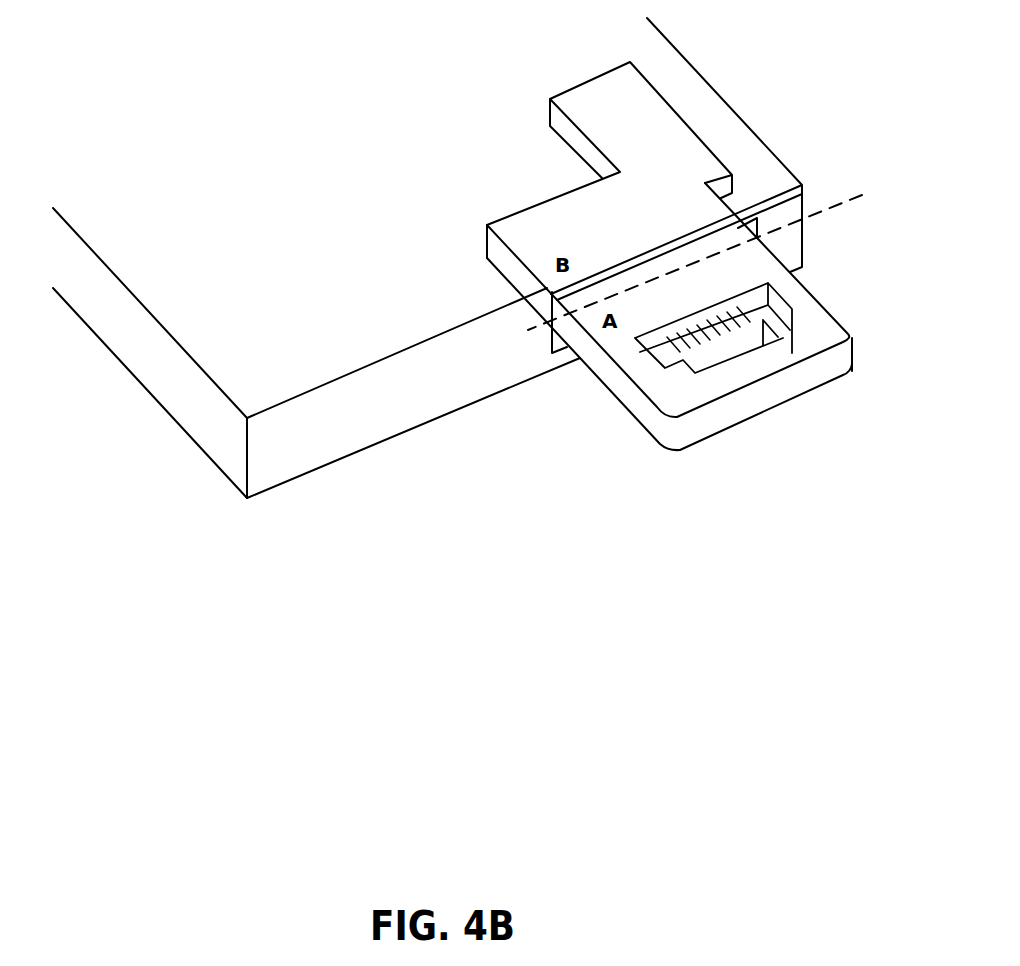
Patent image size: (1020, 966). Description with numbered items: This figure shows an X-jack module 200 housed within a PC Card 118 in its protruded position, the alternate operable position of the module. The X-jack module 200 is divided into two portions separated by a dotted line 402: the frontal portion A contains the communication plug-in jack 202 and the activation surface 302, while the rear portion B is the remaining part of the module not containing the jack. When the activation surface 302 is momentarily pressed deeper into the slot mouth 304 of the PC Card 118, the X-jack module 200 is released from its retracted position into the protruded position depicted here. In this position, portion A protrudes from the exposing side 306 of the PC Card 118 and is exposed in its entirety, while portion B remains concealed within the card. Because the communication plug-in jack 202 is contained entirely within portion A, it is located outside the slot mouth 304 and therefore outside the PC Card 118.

The PC Card 118 is at (203, 455).
The X-jack module 200 is at (522, 210).
The communication plug-in jack 202 is at (792, 353).
The activation surface 302 is at (704, 423).
The slot mouth 304 is at (552, 353).
The exposing side 306 is at (410, 403).
The dotted line 402 is at (823, 208).